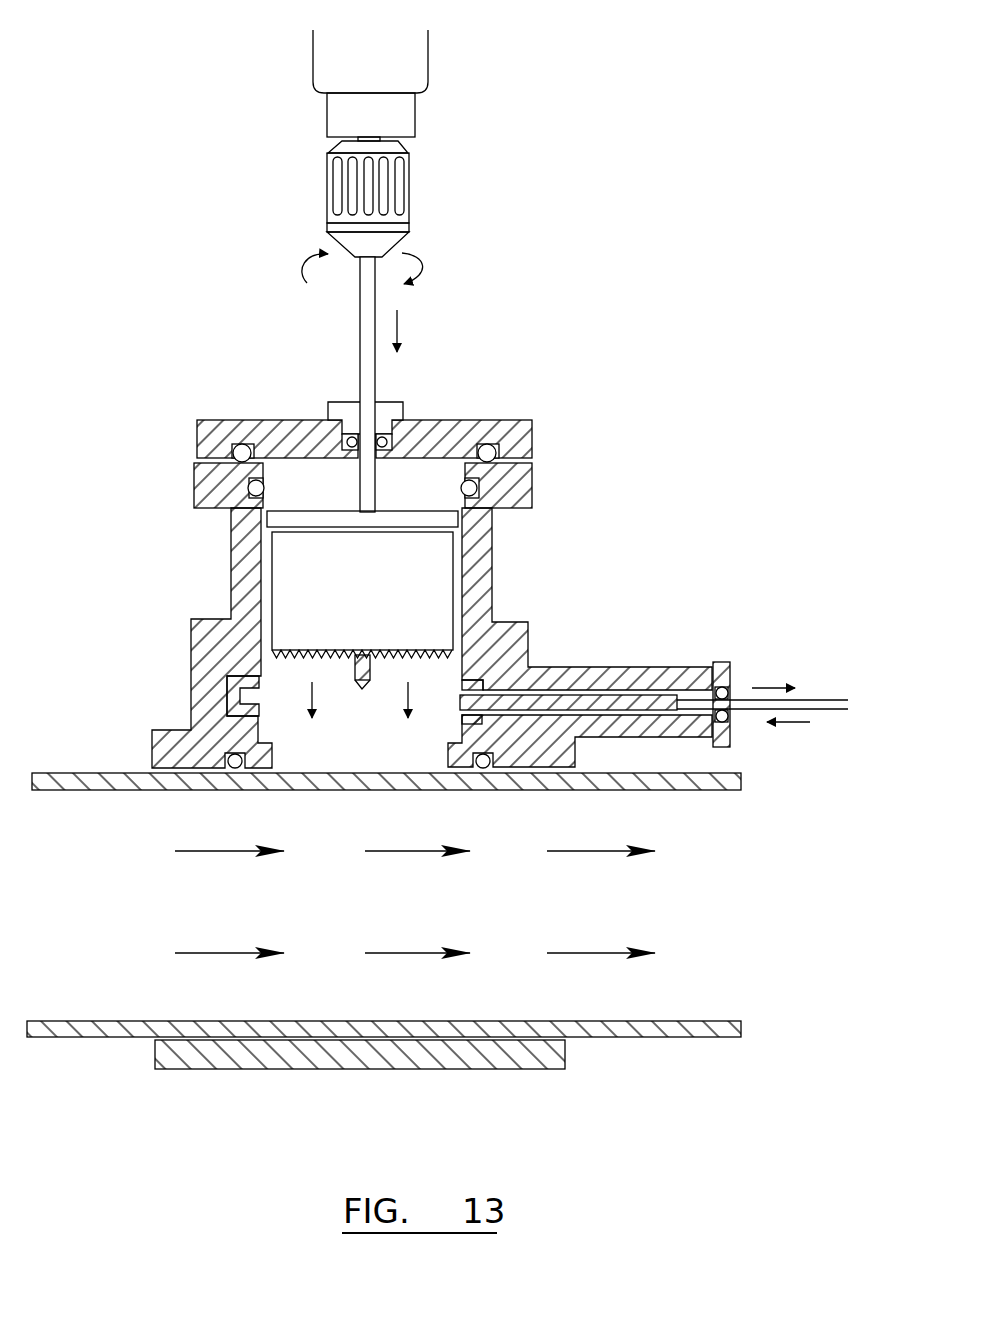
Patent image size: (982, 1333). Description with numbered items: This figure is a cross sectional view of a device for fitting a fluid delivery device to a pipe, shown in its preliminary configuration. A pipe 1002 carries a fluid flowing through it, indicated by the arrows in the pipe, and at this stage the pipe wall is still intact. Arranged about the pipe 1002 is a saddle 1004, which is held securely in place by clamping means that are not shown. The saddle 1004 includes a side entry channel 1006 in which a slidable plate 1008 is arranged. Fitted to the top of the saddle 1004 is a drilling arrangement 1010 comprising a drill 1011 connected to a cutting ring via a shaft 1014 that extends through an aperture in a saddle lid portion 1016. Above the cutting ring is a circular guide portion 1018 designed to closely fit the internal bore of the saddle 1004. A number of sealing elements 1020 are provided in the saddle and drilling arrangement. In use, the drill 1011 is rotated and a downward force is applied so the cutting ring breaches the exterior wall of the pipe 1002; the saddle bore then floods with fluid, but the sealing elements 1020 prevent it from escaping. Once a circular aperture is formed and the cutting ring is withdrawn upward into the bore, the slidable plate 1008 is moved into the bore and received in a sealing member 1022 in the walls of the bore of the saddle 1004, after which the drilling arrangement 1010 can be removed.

The pipe 1002 is at (88, 913).
The saddle 1004 is at (516, 561).
The side entry channel 1006 is at (600, 690).
The slidable plate 1008 is at (623, 697).
The drilling arrangement 1010 is at (589, 243).
The drill 1011 is at (398, 118).
The shaft 1014 is at (363, 336).
The saddle lid portion 1016 is at (270, 428).
The circular guide portion 1018 is at (418, 516).
The sealing elements 1020 is at (250, 486).
The sealing member 1022 is at (230, 697).